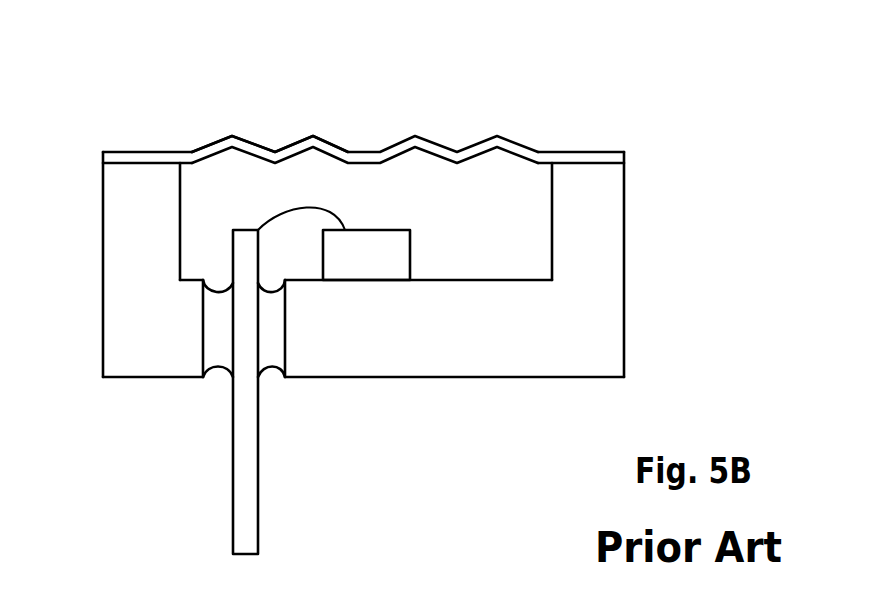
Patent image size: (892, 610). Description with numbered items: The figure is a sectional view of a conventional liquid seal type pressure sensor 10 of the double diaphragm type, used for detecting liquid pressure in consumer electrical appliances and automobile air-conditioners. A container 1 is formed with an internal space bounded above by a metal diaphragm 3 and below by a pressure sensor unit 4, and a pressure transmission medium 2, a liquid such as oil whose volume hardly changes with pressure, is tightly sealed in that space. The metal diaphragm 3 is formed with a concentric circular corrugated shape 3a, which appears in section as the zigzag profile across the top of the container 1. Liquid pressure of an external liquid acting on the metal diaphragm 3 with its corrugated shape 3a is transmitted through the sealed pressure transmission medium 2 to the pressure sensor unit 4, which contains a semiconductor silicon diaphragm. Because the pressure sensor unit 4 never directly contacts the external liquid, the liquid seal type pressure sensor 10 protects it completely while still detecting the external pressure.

The liquid seal type pressure sensor 10 is at (681, 18).
The container 1 is at (602, 209).
The pressure transmission medium 2 is at (510, 248).
The metal diaphragm 3 is at (308, 103).
The corrugated shape 3a is at (313, 137).
The pressure sensor unit 4 is at (362, 266).